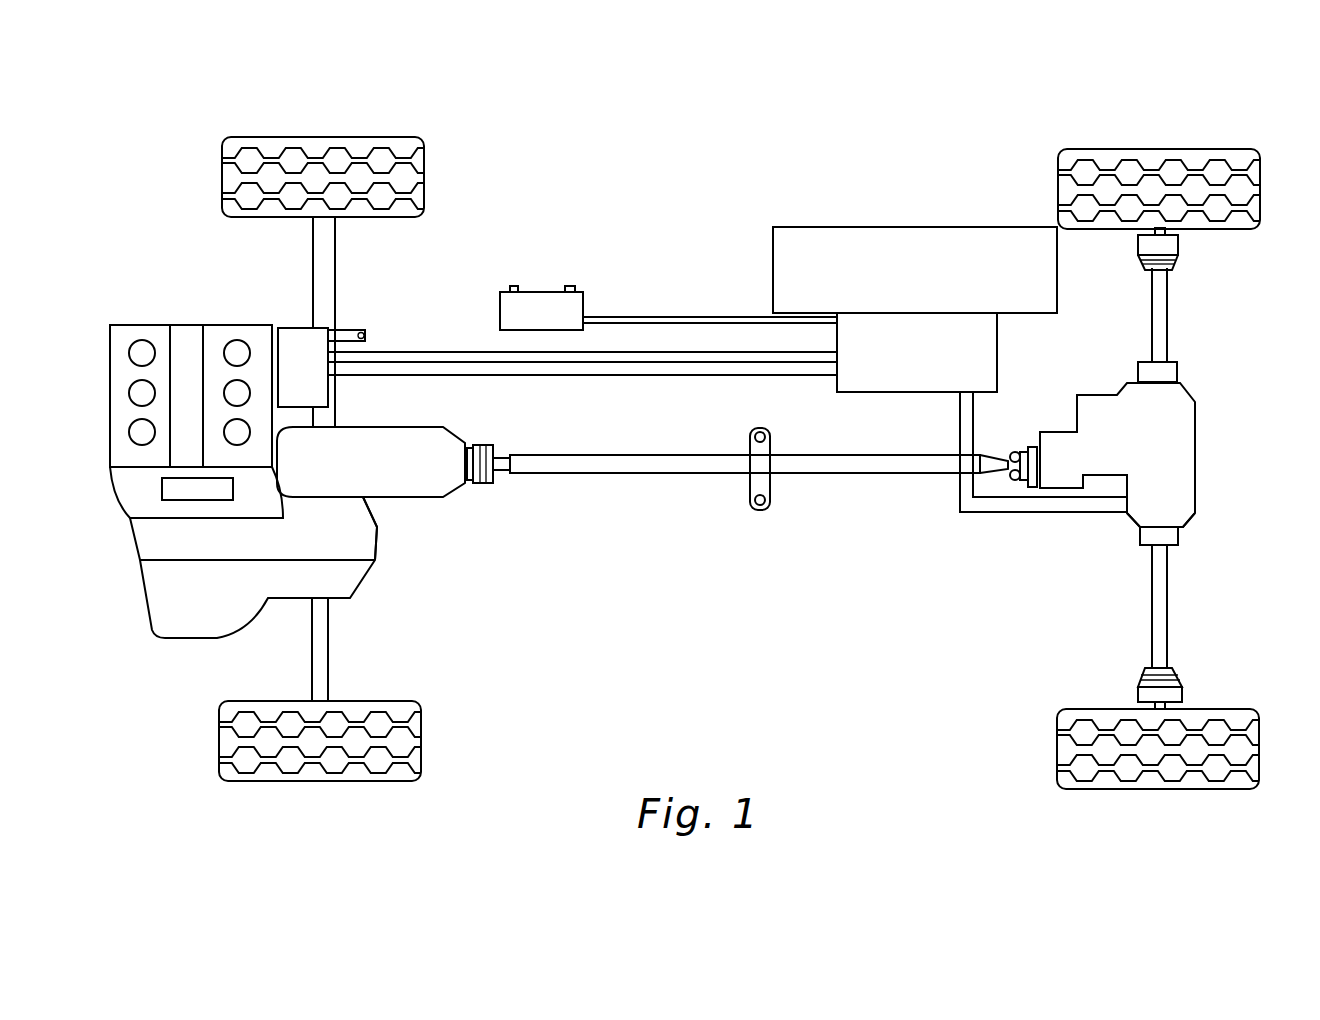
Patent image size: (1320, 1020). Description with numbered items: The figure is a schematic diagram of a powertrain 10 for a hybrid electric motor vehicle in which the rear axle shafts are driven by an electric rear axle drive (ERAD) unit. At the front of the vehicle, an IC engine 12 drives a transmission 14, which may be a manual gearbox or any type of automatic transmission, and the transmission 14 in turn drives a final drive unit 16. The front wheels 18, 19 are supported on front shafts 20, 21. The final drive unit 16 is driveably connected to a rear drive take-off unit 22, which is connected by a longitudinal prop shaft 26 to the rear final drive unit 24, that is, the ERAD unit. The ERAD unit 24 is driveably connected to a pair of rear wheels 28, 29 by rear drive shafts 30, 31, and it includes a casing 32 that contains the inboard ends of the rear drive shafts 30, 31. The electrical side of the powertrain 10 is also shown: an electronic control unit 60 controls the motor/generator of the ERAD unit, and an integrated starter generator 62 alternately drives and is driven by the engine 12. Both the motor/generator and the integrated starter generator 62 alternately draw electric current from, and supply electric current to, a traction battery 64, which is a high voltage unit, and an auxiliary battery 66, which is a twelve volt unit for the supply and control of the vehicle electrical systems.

The powertrain 10 is at (690, 540).
The IC engine 12 is at (107, 377).
The transmission 14 is at (142, 582).
The final drive unit 16 is at (363, 540).
The front wheel 18 is at (316, 137).
The front wheel 19 is at (330, 781).
The front shaft 20 is at (332, 270).
The front shaft 21 is at (330, 646).
The rear drive take-off unit 22 is at (393, 470).
The rear final drive unit 24 is at (1197, 433).
The longitudinal prop shaft 26 is at (592, 473).
The rear wheel 28 is at (1145, 149).
The rear wheel 29 is at (1228, 789).
The rear drive shaft 30 is at (1170, 298).
The rear drive shaft 31 is at (1167, 600).
The casing 32 is at (1195, 487).
The electronic control unit 60 is at (998, 332).
The integrated starter generator 62 is at (290, 325).
The traction battery 64 is at (885, 227).
The auxiliary battery 66 is at (542, 290).